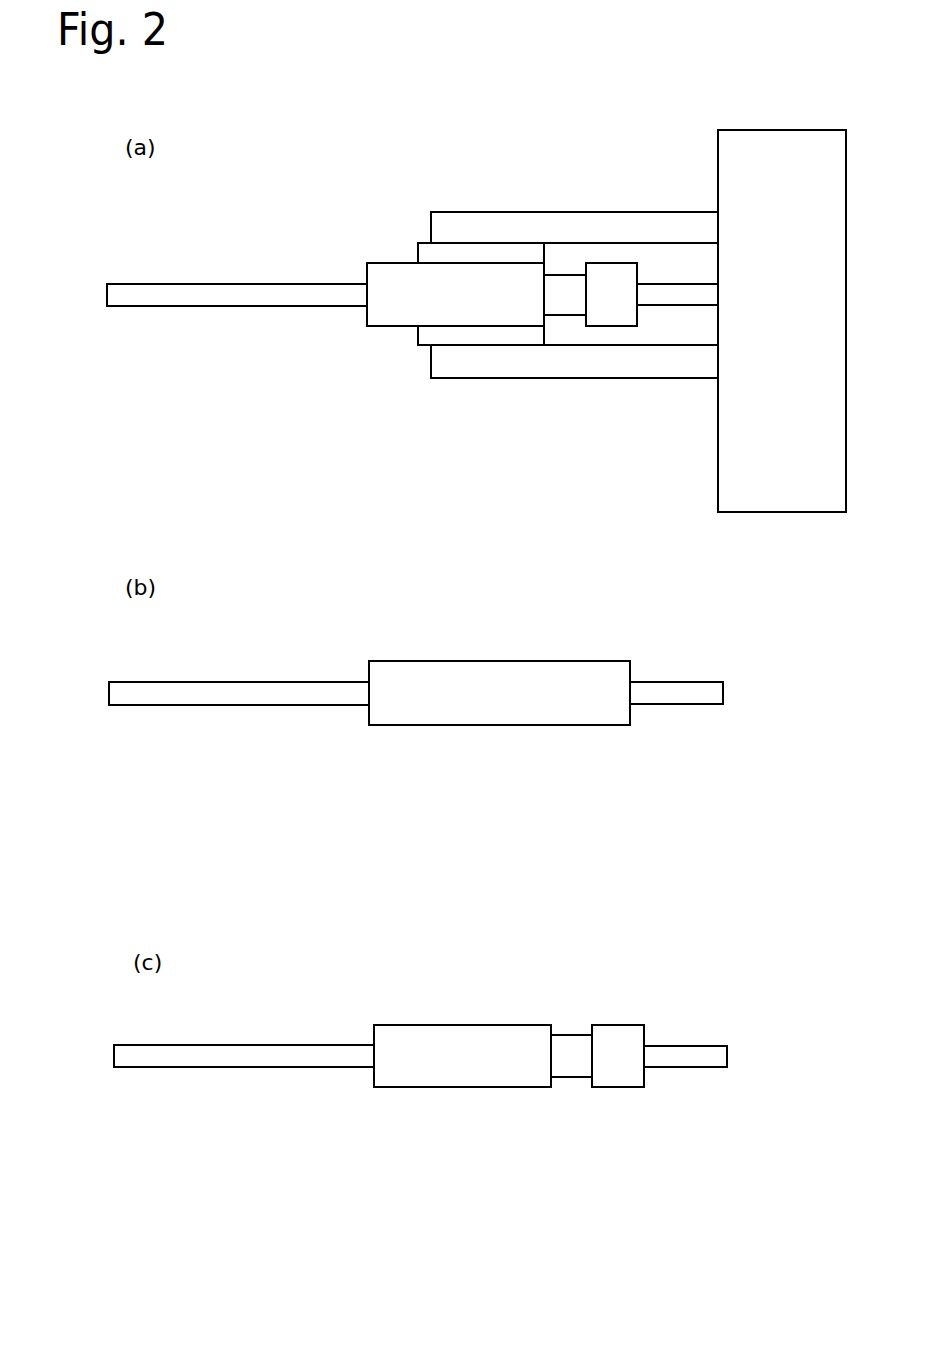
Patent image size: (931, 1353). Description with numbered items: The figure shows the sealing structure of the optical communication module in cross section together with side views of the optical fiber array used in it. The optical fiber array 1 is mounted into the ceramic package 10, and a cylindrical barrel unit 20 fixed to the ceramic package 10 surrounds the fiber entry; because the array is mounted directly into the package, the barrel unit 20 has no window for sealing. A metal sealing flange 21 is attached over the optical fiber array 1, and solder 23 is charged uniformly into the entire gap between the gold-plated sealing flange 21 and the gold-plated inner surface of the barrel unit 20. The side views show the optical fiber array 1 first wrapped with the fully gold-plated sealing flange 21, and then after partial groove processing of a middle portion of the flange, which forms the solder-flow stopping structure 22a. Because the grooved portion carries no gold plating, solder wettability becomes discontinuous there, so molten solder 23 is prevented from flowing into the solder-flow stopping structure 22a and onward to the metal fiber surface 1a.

The optical fiber array 1 is at (305, 293).
The metal fiber surface 1a is at (673, 292).
The ceramic package 10 is at (725, 360).
The barrel unit 20 is at (510, 355).
The sealing flange 21 is at (390, 310).
The solder-flow stopping structure 22a is at (566, 283).
The solder 23 is at (428, 250).